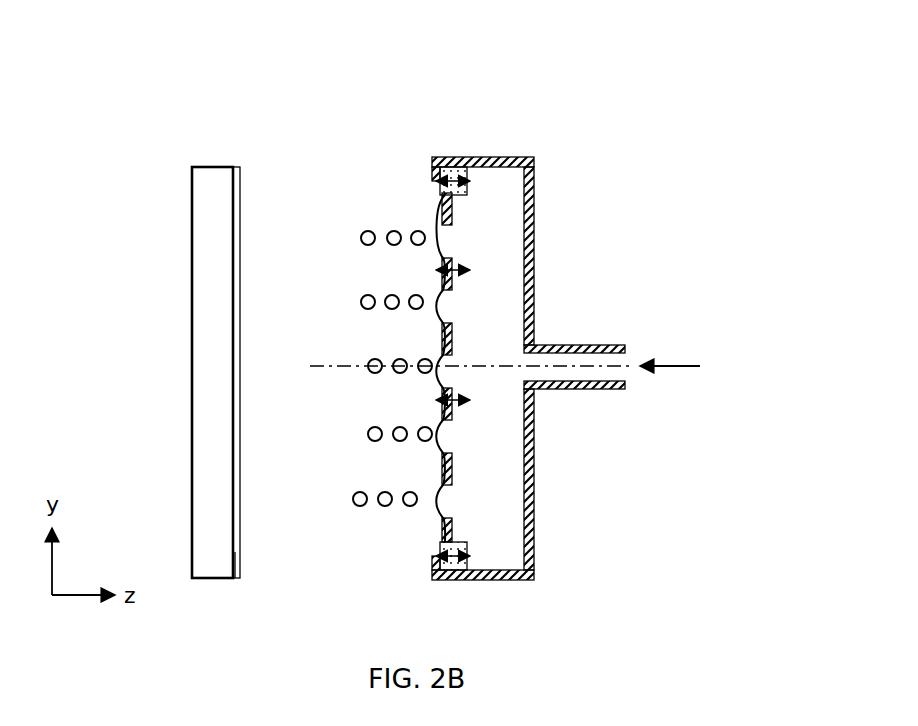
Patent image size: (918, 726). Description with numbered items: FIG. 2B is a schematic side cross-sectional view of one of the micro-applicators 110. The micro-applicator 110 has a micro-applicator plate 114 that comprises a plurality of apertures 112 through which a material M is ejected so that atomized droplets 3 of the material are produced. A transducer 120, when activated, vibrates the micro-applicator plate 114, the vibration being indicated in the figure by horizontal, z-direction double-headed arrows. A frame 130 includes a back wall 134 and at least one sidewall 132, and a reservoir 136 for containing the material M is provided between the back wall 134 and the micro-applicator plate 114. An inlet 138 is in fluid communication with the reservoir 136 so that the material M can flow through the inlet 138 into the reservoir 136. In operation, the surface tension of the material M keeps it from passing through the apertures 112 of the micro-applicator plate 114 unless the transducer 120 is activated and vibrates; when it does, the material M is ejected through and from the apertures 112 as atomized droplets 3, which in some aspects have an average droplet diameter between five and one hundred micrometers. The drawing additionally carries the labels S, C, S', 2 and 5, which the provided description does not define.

The micro-applicator 110 is at (712, 94).
The apertures 112 is at (448, 234).
The micro-applicator plate 114 is at (440, 208).
The transducer 120 is at (450, 172).
The frame 130 is at (544, 156).
The sidewall 132 is at (509, 157).
The back wall 134 is at (535, 515).
The reservoir 136 is at (500, 314).
The inlet 138 is at (610, 345).
The substrate S is at (243, 329).
The coating layer C is at (238, 524).
The substrate surface S' is at (212, 589).
The material M is at (682, 367).
The axis 2 is at (328, 368).
The atomized droplets 3 is at (366, 246).
The particle beam 5 is at (350, 231).